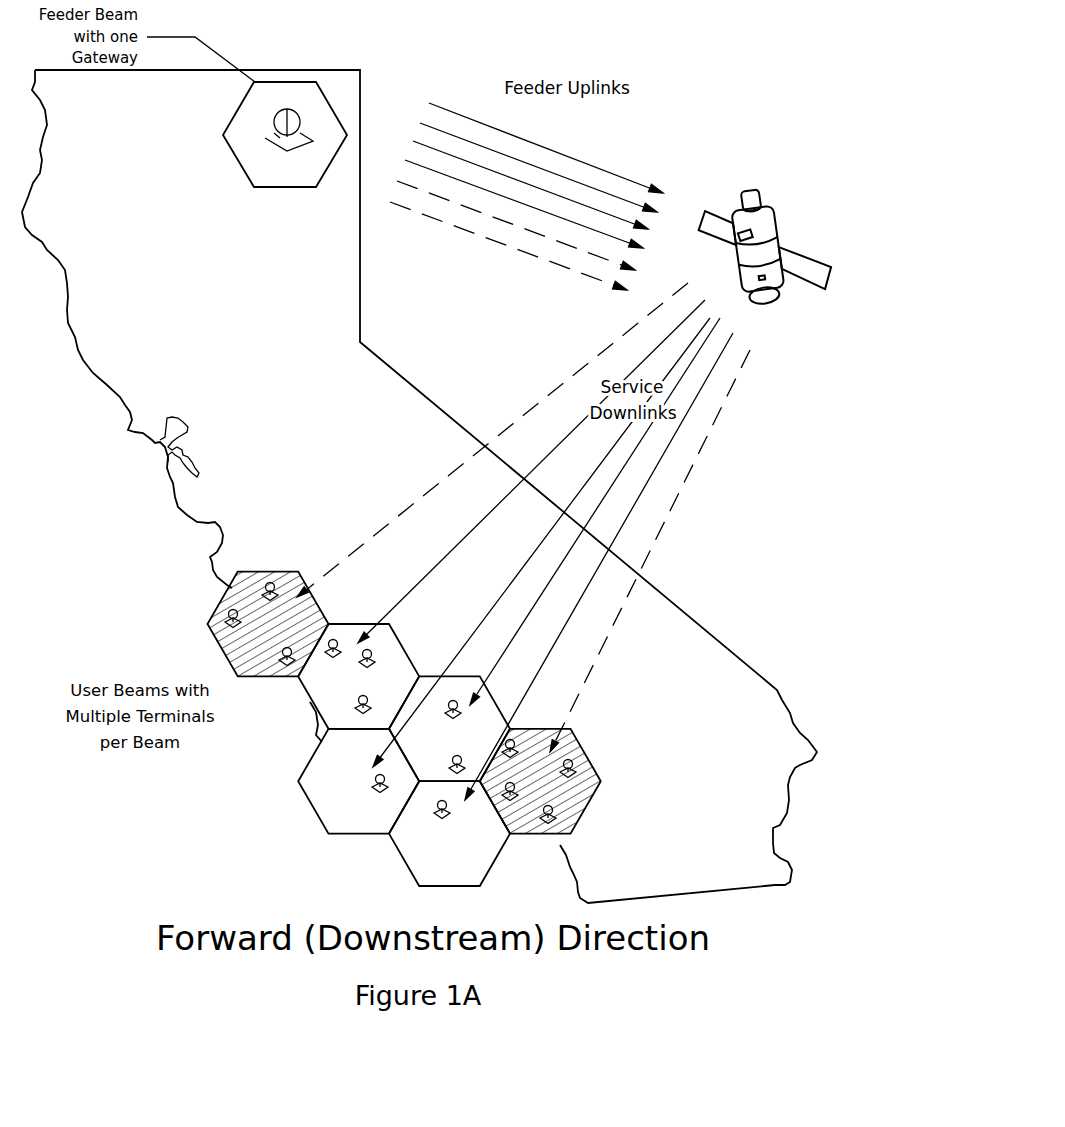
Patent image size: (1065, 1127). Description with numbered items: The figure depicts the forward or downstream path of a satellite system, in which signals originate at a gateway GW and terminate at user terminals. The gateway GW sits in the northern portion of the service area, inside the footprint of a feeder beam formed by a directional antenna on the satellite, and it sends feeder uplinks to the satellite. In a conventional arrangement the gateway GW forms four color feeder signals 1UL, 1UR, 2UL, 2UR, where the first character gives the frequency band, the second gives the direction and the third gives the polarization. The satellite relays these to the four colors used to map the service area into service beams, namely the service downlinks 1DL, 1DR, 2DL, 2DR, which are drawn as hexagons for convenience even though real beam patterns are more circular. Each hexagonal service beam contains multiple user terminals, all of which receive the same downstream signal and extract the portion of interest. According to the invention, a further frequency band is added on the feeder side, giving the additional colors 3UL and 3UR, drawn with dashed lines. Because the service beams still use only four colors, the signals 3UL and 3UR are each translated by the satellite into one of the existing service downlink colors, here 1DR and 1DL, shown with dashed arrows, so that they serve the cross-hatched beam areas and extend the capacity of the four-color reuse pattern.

The gateway GW is at (285, 134).
The feeder uplink signal in first frequency band with left hand polarization 1UL is at (546, 148).
The feeder uplink signal in first frequency band with right hand polarization 1UR is at (538, 167).
The feeder uplink signal in second frequency band with left hand polarization 2UL is at (530, 185).
The feeder uplink signal in second frequency band with right hand polarization 2UR is at (524, 204).
The feeder uplink signal in third frequency band with left hand polarization 3UL is at (516, 225).
The feeder uplink signal in third frequency band with right hand polarization 3UR is at (508, 246).
The service downlink signal in first frequency band with right hand polarization 1DR is at (464, 532).
The service downlink signal in first frequency band with left hand polarization 1DL is at (524, 567).
The service downlink signal in second frequency band with left hand polarization 2DL is at (504, 576).
The service downlink signal in second frequency band with right hand polarization 2DR is at (561, 609).